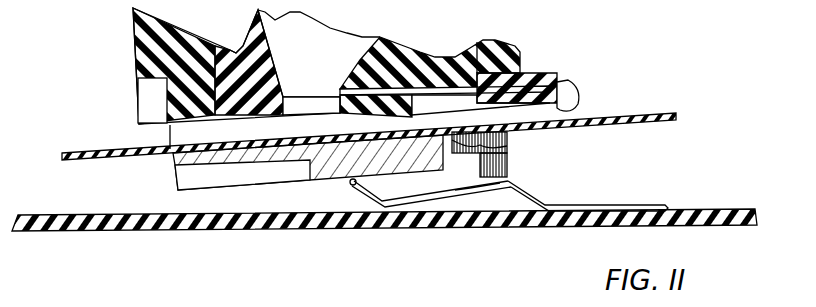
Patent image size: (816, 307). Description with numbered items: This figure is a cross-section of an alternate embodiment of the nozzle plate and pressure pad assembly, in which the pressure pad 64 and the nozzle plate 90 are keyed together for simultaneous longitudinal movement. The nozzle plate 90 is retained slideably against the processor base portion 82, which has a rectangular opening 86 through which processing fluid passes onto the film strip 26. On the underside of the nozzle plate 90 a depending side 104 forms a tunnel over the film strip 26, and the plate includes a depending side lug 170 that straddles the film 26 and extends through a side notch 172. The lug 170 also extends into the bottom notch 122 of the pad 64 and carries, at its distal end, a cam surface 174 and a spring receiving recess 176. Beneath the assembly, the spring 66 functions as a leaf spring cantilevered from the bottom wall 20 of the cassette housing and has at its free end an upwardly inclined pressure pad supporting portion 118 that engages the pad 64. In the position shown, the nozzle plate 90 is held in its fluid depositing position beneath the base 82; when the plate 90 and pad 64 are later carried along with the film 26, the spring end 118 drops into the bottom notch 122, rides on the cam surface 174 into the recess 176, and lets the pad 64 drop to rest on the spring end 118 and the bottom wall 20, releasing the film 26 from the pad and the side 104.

The bottom wall 20 is at (574, 228).
The film strip 26 is at (623, 122).
The pressure pad 64 is at (327, 173).
The spring 66 is at (482, 197).
The base portion 82 is at (388, 58).
The rectangular opening 86 is at (300, 96).
The nozzle plate 90 is at (520, 73).
The depending side 104 is at (178, 133).
The pressure pad supporting portion 118 is at (350, 181).
The bottom notch 122 is at (467, 172).
The side lug 170 is at (507, 150).
The side notch 172 is at (479, 60).
The cam surface 174 is at (467, 170).
The spring receiving recess 176 is at (503, 158).